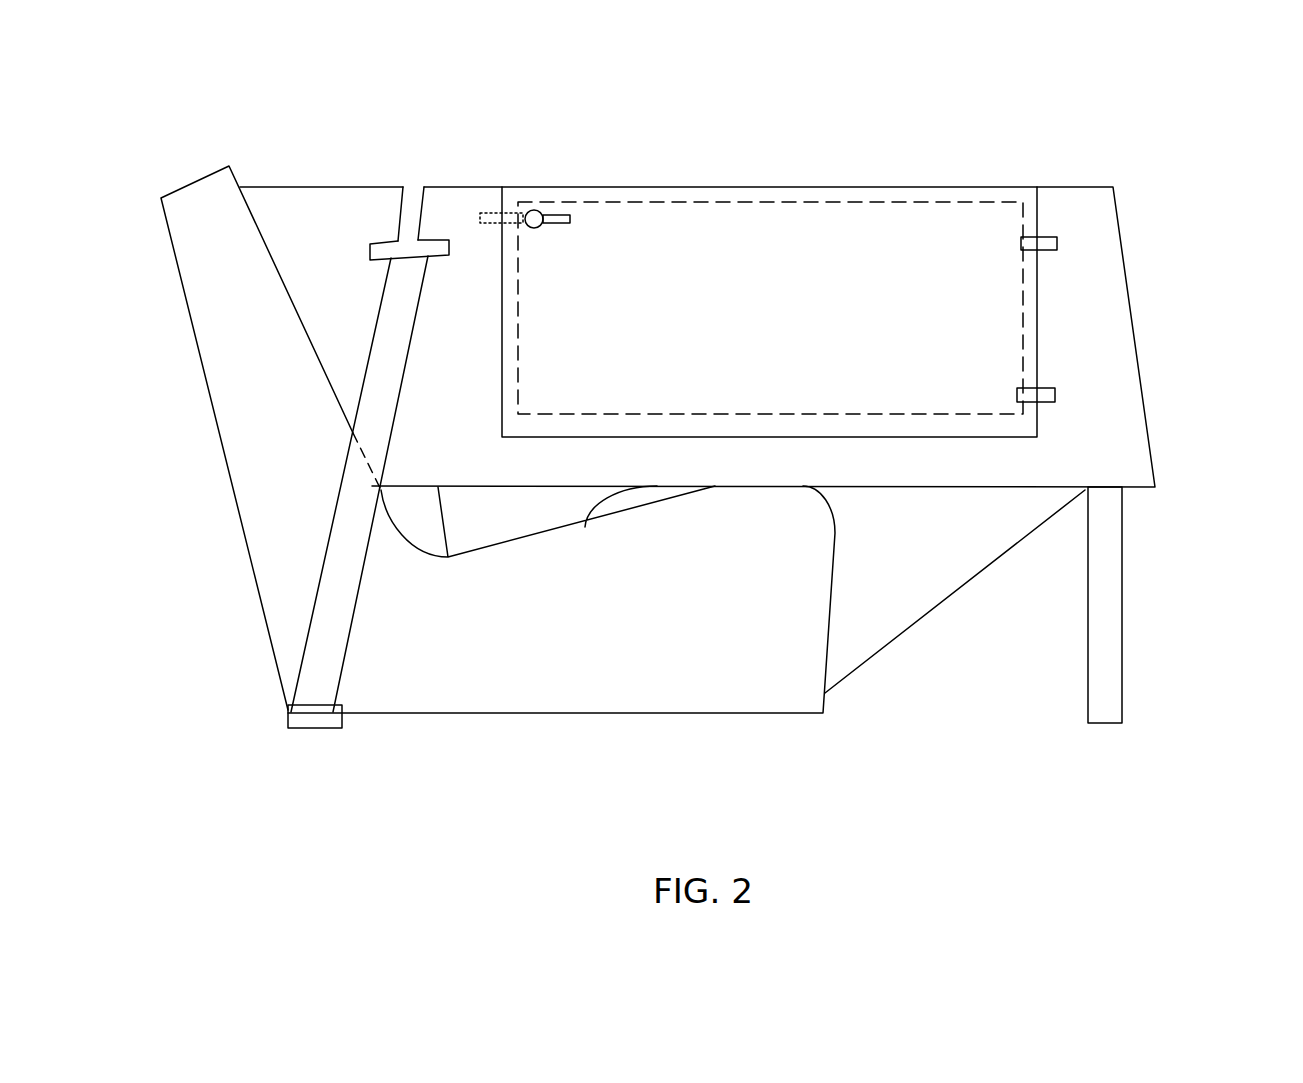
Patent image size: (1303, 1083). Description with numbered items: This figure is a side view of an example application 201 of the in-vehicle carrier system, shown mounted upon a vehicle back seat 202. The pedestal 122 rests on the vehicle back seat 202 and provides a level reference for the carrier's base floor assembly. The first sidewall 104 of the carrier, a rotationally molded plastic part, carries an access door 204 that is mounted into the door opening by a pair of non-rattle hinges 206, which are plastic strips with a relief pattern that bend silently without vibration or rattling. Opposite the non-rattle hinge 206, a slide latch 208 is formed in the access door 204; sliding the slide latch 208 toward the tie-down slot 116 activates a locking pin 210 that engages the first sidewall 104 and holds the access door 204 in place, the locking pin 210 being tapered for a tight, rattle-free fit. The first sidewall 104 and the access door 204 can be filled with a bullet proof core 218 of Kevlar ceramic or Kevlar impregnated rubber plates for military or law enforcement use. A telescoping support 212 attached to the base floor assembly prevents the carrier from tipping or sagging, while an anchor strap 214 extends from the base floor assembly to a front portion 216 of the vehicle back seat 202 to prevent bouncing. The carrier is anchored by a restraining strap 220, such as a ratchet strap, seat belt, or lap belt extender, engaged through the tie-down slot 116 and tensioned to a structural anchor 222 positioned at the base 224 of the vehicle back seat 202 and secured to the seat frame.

The application 201 is at (288, 76).
The first sidewall 104 is at (498, 462).
The tie-down slot 116 is at (405, 252).
The access door 204 is at (805, 385).
The bullet proof core 218 is at (795, 203).
The slide latch 208 is at (543, 212).
The locking pin 210 is at (493, 213).
The non-rattle hinge 206 is at (1057, 243).
The restraining strap 220 is at (353, 517).
The structural anchor 222 is at (322, 722).
The pedestal 122 is at (528, 529).
The vehicle back seat 202 is at (713, 654).
The front portion 216 is at (846, 633).
The anchor strap 214 is at (973, 582).
The telescoping support 212 is at (1102, 567).
The base 224 is at (455, 742).